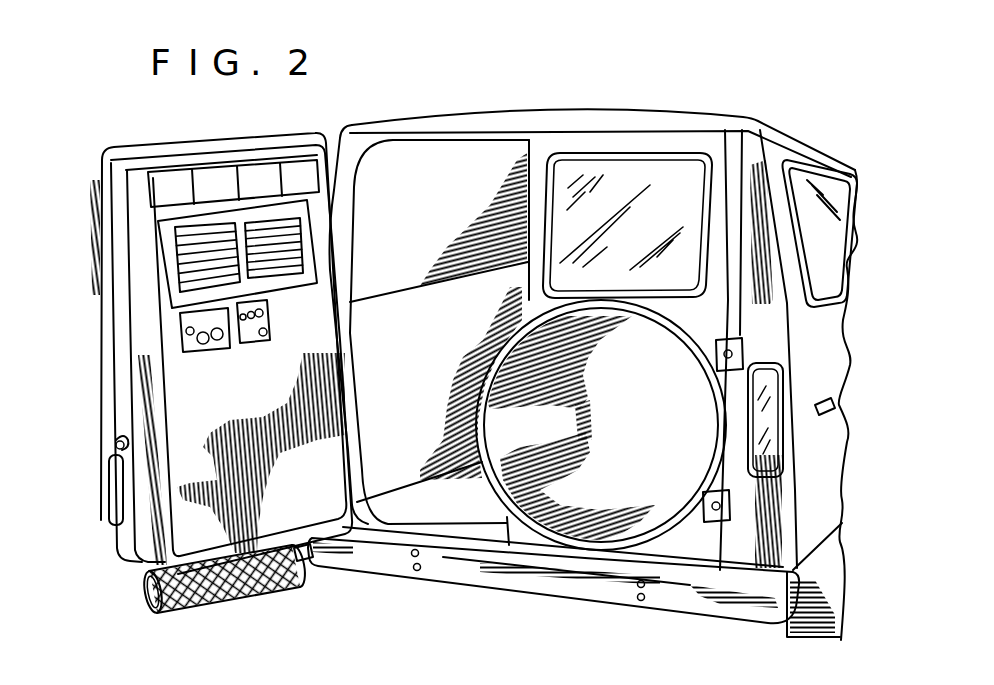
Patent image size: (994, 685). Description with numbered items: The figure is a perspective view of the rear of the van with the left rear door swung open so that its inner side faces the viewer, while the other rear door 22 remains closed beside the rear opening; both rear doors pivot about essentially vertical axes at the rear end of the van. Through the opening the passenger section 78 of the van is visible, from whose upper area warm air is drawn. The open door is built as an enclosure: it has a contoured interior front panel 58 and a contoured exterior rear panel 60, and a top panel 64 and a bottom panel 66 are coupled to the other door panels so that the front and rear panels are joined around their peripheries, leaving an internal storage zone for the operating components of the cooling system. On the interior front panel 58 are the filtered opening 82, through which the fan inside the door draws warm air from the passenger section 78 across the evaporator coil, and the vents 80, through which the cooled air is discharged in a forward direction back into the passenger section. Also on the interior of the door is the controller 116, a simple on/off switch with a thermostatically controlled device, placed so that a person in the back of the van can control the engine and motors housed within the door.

The rear door 22 is at (718, 152).
The passenger section 78 is at (446, 166).
The top panel 64 is at (210, 156).
The vents 80 is at (162, 183).
The filtered opening 82 is at (185, 258).
The controller 116 is at (180, 323).
The exterior rear panel 60 is at (108, 444).
The bottom panel 66 is at (150, 578).
The interior front panel 58 is at (222, 590).